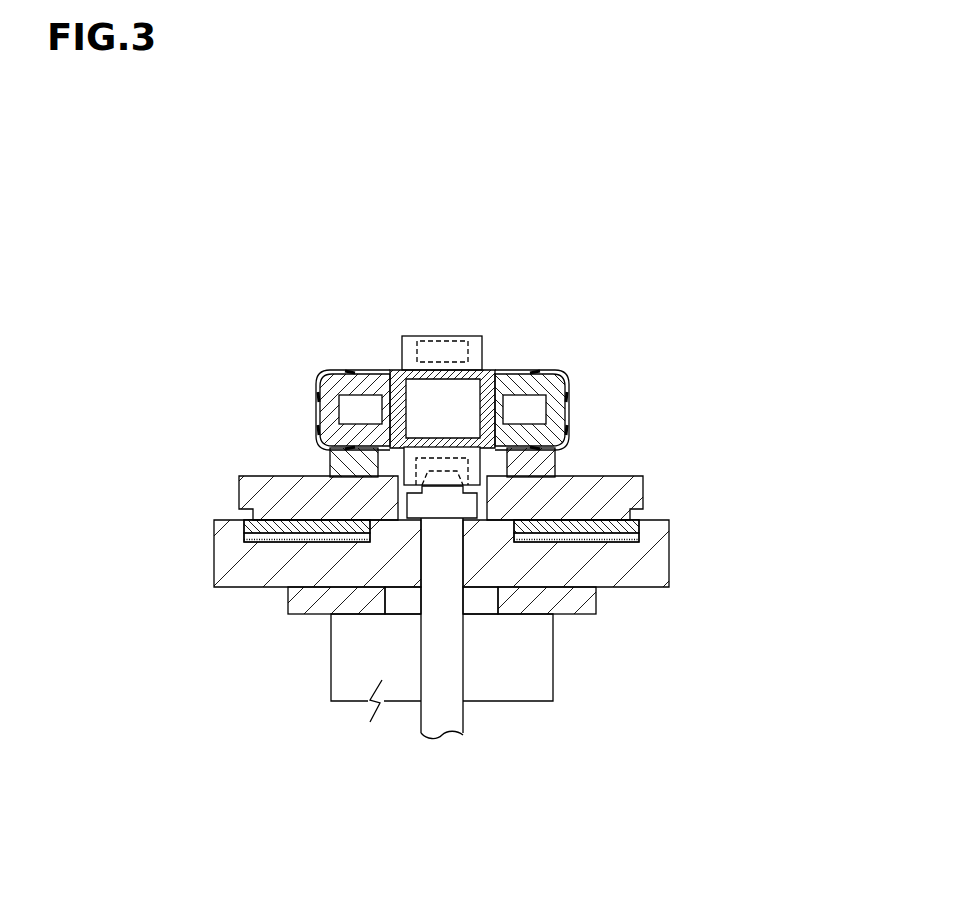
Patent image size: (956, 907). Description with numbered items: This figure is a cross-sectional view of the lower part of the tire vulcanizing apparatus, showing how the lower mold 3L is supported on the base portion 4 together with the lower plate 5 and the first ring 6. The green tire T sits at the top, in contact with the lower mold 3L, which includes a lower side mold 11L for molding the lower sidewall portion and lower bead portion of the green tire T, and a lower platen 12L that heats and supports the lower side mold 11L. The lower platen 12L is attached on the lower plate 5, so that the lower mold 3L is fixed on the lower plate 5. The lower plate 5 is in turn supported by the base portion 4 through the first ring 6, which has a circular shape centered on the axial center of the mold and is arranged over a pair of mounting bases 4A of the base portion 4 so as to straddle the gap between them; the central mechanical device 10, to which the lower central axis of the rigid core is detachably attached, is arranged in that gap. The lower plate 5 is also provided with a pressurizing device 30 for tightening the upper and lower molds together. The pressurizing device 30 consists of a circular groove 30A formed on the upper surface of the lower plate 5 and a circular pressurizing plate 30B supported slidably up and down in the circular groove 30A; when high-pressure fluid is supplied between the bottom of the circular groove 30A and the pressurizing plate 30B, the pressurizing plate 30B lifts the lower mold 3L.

The green tire T is at (565, 385).
The lower mold 3L is at (122, 393).
The lower side mold 11L is at (330, 459).
The lower platen 12L is at (270, 498).
The pressurizing device 30 is at (766, 393).
The circular groove 30A is at (602, 542).
The circular pressurizing plate 30B is at (573, 528).
The lower plate 5 is at (213, 553).
The first ring 6 is at (588, 603).
The base portion 4 is at (523, 688).
The mounting bases 4A is at (553, 657).
The central mechanical device 10 is at (464, 655).